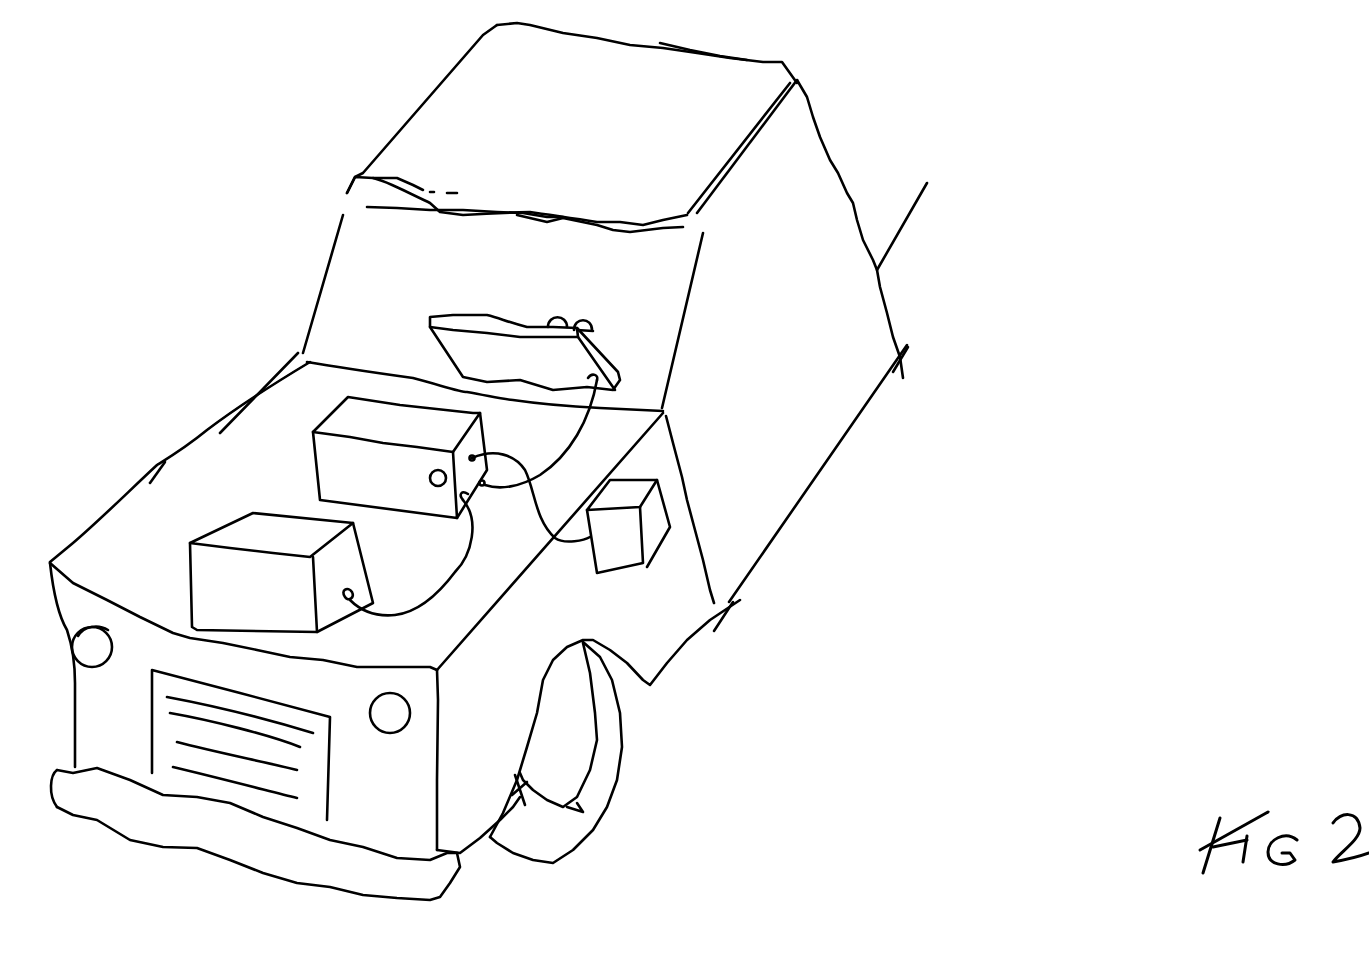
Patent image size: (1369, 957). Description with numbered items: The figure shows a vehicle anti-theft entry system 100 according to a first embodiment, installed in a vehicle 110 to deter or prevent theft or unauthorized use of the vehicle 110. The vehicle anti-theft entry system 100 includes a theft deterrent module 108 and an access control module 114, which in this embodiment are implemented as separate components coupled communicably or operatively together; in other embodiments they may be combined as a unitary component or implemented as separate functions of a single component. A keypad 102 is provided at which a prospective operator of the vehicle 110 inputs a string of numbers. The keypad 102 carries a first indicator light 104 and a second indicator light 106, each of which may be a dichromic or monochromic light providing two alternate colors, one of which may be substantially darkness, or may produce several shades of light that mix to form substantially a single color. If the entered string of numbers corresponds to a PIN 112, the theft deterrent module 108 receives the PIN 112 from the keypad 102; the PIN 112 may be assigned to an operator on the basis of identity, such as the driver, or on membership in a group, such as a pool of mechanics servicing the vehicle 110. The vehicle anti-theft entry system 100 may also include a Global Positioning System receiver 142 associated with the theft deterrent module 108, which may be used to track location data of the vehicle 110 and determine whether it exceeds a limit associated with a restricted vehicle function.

The vehicle anti-theft entry system 100 is at (290, 483).
The keypad 102 is at (525, 352).
The first indicator light 104 is at (545, 302).
The second indicator light 106 is at (612, 318).
The theft deterrent module 108 is at (400, 457).
The vehicle 110 is at (488, 461).
The PIN 112 is at (476, 495).
The access control module 114 is at (281, 572).
The Global Positioning System (GPS) receiver 142 is at (628, 526).